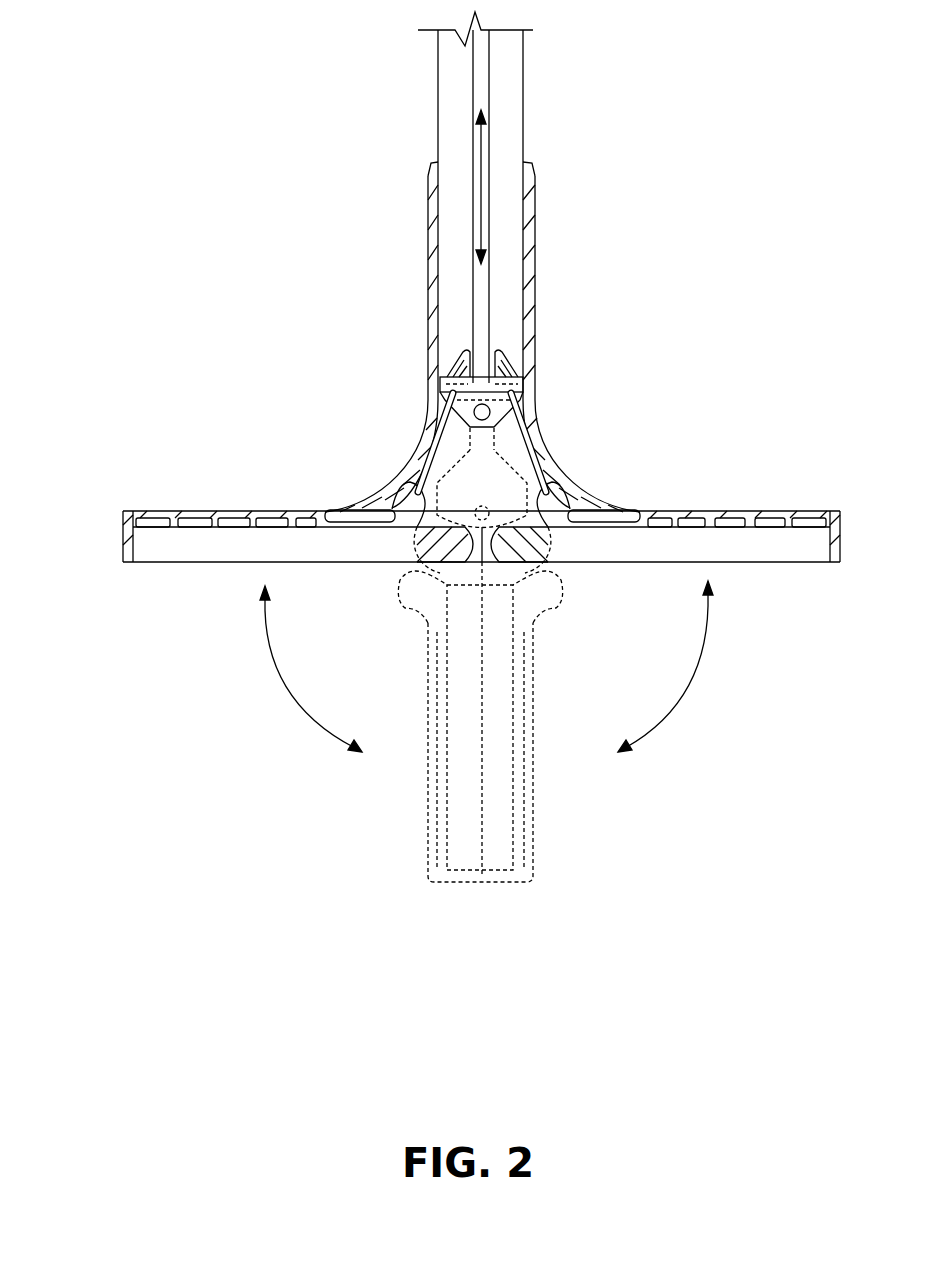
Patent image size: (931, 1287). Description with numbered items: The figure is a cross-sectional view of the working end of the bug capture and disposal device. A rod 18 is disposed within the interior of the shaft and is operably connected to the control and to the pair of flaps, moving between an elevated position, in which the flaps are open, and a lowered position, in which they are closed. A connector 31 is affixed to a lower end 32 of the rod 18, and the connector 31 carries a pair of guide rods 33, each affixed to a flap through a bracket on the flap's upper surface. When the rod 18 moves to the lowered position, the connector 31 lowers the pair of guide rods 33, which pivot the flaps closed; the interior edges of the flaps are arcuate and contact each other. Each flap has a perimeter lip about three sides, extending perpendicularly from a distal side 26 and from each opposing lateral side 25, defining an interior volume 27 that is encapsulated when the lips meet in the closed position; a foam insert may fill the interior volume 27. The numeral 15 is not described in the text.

The rod 18 is at (486, 80).
The lower end 32 is at (482, 308).
The connector 31 is at (543, 350).
The pair of guide rods 33 is at (428, 440).
The top layer of head plate 15 is at (190, 517).
The distal side 26 is at (123, 525).
The interior volume 27 is at (155, 550).
The lateral side 25 is at (182, 565).